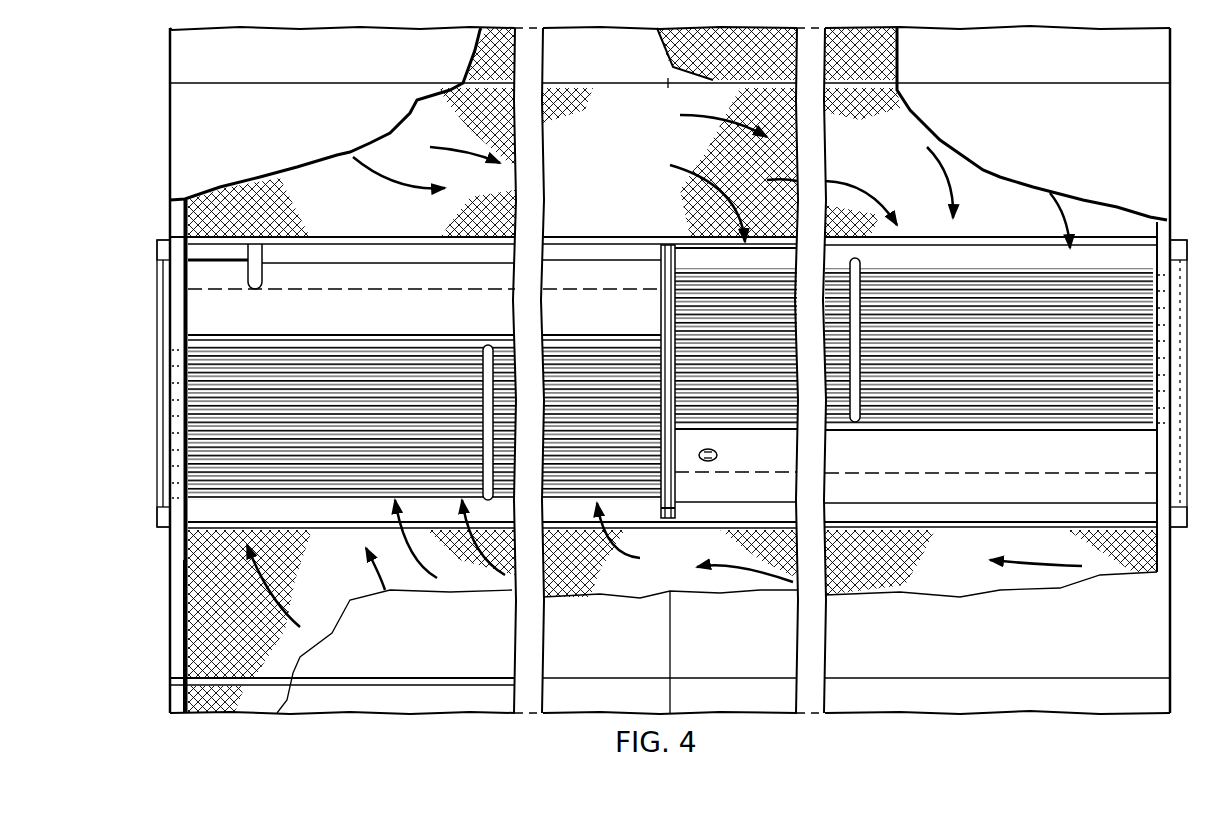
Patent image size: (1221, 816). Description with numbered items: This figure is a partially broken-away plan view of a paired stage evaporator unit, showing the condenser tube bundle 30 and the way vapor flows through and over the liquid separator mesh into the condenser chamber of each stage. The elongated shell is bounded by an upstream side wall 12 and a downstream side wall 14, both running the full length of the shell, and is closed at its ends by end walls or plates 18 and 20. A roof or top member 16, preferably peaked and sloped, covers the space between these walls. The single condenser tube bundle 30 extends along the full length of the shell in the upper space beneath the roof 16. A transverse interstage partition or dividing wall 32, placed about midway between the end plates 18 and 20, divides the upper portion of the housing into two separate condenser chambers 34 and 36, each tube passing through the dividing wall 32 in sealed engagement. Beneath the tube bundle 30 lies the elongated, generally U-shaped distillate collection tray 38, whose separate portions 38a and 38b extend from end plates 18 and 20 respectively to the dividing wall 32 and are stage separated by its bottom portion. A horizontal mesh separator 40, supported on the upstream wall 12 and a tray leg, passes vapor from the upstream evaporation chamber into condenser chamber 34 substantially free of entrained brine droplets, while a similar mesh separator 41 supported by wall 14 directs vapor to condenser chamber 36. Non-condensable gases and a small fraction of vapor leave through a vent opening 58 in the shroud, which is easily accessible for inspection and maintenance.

The upstream side wall 12 is at (603, 86).
The downstream side wall 14 is at (272, 683).
The roof or top member 16 is at (1158, 645).
The end wall or plate 18 is at (1163, 553).
The end wall or plate 20 is at (180, 590).
The condenser tube bundle 30 is at (308, 390).
The transverse interstage partition or dividing wall 32 is at (663, 500).
The condenser chamber 34 is at (1102, 255).
The condenser chamber 36 is at (272, 518).
The distillate collection tray 38 is at (307, 527).
The tray portion 38a is at (1060, 525).
The tray portion 38b is at (330, 527).
The mesh separator 40 is at (212, 208).
The mesh separator 41 is at (182, 628).
The vent opening 58 is at (718, 453).